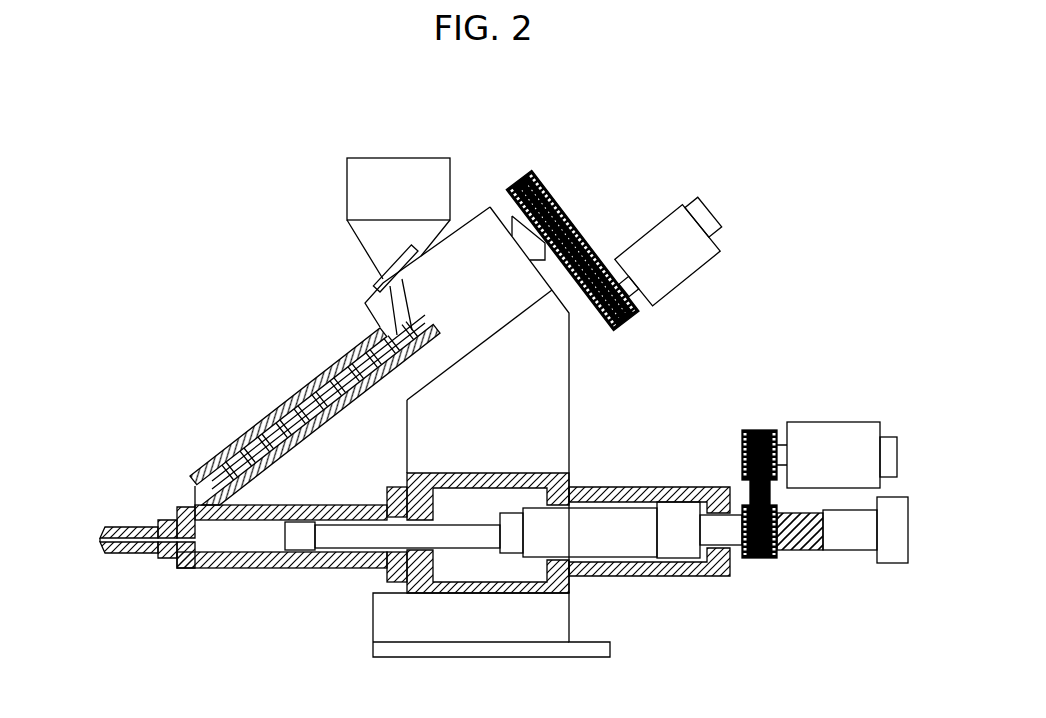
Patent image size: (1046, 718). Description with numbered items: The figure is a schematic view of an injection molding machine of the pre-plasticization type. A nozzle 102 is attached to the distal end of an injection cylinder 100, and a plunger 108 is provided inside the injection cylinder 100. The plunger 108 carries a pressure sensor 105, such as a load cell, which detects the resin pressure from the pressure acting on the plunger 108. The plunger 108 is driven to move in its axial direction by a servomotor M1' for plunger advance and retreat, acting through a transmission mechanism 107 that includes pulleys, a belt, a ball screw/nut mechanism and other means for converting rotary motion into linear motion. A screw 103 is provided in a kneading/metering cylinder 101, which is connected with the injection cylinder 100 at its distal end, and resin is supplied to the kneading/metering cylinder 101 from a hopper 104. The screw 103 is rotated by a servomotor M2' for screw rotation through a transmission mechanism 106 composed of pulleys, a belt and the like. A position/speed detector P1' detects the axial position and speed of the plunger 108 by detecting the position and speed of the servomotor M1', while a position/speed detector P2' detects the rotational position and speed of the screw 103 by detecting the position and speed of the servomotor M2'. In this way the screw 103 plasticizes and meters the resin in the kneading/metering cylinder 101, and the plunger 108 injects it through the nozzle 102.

The injection cylinder 100 is at (226, 572).
The kneading/metering cylinder 101 is at (252, 430).
The nozzle 102 is at (128, 528).
The screw 103 is at (300, 417).
The hopper 104 is at (357, 193).
The pressure sensor 105 is at (890, 553).
The transmission mechanism 106 is at (553, 182).
The transmission mechanism 107 is at (761, 418).
The plunger 108 is at (357, 538).
The servomotor for plunger advance and retreat M1' is at (833, 415).
The position/speed detector P1' is at (909, 425).
The servomotor for screw rotation M2' is at (662, 230).
The position/speed detector P2' is at (708, 184).